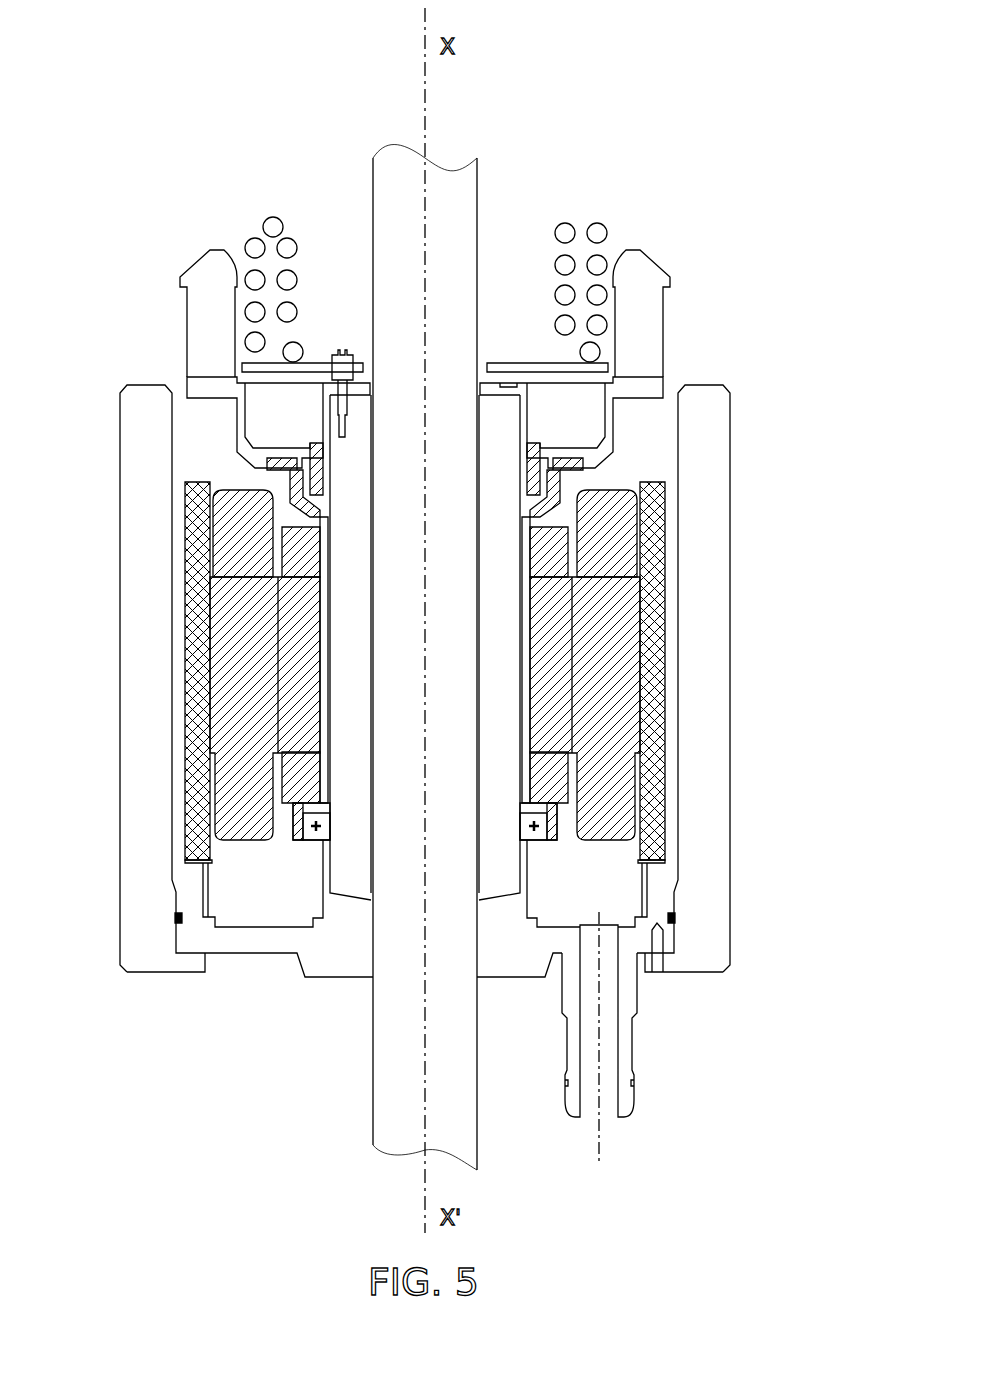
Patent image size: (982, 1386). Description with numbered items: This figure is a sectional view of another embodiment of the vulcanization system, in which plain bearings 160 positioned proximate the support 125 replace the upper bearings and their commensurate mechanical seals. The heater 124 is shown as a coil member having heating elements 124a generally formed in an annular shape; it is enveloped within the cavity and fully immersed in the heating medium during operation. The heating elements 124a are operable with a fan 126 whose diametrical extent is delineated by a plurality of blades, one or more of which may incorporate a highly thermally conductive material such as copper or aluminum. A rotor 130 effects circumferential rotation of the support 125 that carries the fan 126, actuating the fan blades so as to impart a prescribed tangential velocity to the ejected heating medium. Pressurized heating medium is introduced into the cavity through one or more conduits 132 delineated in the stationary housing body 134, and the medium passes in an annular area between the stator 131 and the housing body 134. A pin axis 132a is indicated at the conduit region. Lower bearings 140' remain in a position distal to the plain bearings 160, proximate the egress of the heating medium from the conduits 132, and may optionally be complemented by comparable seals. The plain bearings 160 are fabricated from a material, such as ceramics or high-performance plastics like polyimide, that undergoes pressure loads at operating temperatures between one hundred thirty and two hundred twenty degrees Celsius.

The heater 124 is at (596, 231).
The heating elements 124a is at (287, 280).
The support 125 is at (240, 418).
The fan 126 is at (655, 310).
The rotor 130 is at (548, 610).
The stator 131 is at (625, 675).
The conduits 132 is at (623, 1046).
The pin axis 132a is at (605, 1102).
The housing body 134 is at (708, 797).
The lower bearings 140' is at (512, 927).
The plain bearings 160 is at (288, 468).